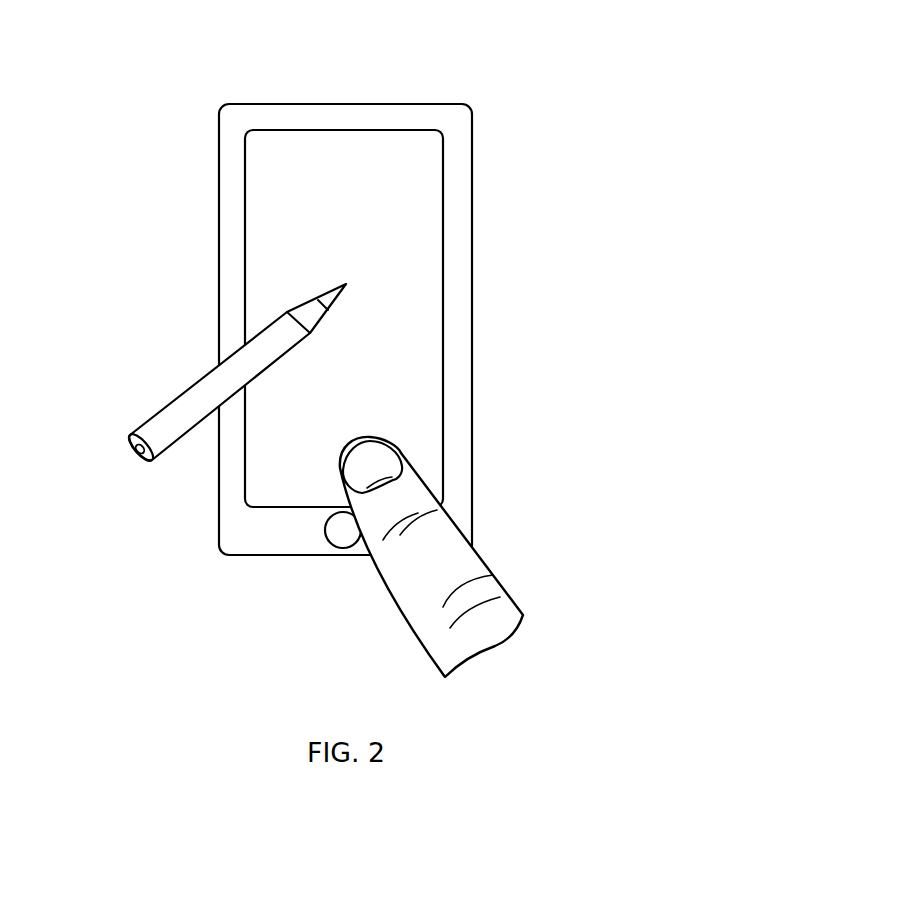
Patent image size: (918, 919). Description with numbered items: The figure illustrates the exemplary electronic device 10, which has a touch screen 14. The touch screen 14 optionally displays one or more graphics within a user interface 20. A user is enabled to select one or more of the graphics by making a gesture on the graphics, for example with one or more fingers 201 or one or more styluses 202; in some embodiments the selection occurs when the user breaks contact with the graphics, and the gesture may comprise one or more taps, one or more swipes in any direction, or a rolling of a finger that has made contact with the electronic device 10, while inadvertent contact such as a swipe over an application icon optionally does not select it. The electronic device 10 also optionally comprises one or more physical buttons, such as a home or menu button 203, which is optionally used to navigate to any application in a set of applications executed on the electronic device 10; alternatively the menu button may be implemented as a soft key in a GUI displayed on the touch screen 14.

The electronic device 10 is at (505, 73).
The touch screen 14 is at (438, 325).
The user interface 20 is at (278, 458).
The finger 201 is at (512, 577).
The stylus 202 is at (333, 537).
The menu button 203 is at (182, 402).